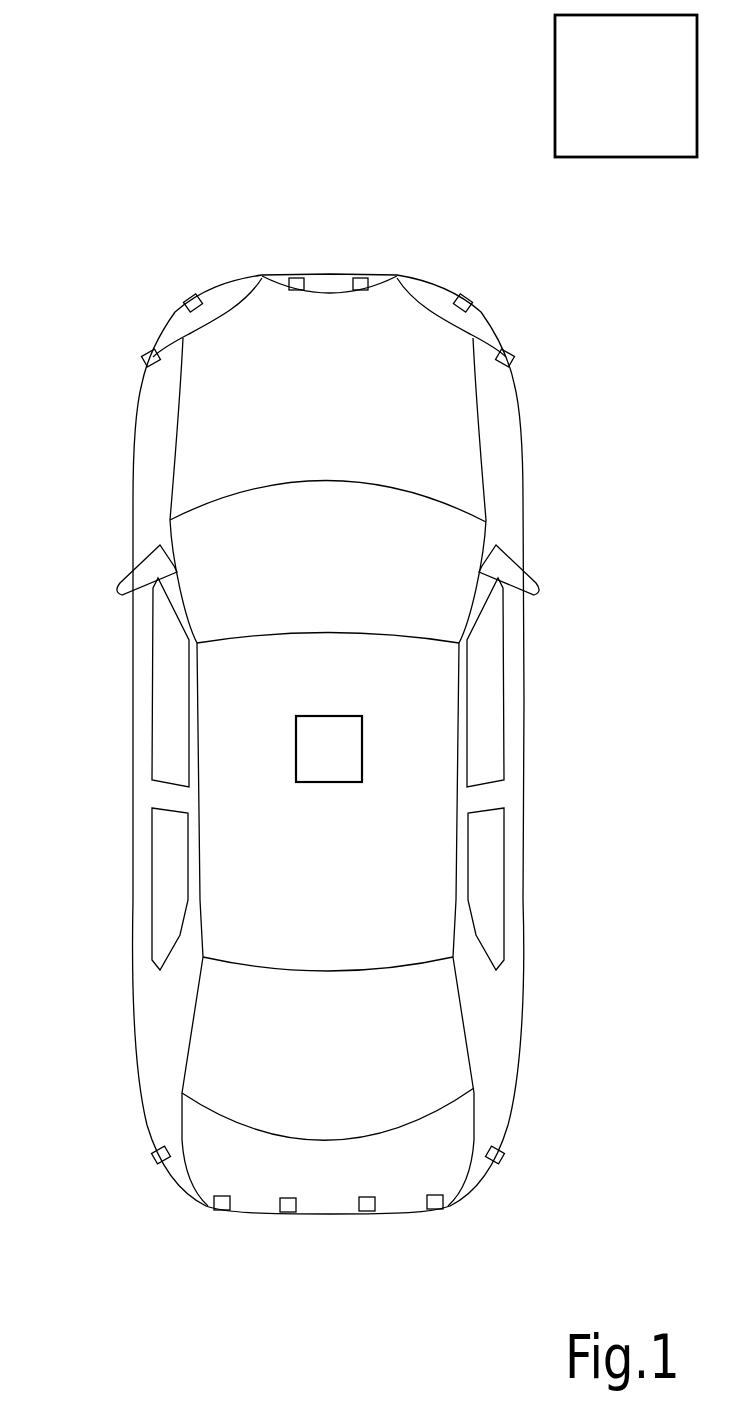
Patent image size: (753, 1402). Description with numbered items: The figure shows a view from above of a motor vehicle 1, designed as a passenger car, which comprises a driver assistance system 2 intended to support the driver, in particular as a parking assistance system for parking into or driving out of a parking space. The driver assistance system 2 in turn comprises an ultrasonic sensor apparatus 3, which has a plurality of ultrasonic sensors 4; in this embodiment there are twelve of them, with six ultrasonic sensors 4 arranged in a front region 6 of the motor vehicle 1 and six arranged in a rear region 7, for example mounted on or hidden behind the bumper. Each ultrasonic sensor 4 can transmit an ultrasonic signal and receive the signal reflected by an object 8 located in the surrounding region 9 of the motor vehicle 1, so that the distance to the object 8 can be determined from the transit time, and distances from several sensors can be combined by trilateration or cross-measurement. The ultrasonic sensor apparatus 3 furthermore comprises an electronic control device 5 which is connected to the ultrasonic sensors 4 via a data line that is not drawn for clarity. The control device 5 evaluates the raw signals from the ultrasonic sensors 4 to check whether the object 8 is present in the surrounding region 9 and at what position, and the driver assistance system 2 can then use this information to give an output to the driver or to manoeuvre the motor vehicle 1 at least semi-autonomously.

The motor vehicle 1 is at (330, 276).
The driver assistance system 2 is at (302, 679).
The ultrasonic sensor apparatus 3 is at (326, 749).
The ultrasonic sensor 4 is at (191, 296).
The electronic control device 5 is at (331, 783).
The front region 6 is at (432, 252).
The rear region 7 is at (413, 1220).
The object 8 is at (643, 160).
The surrounding region 9 is at (354, 129).